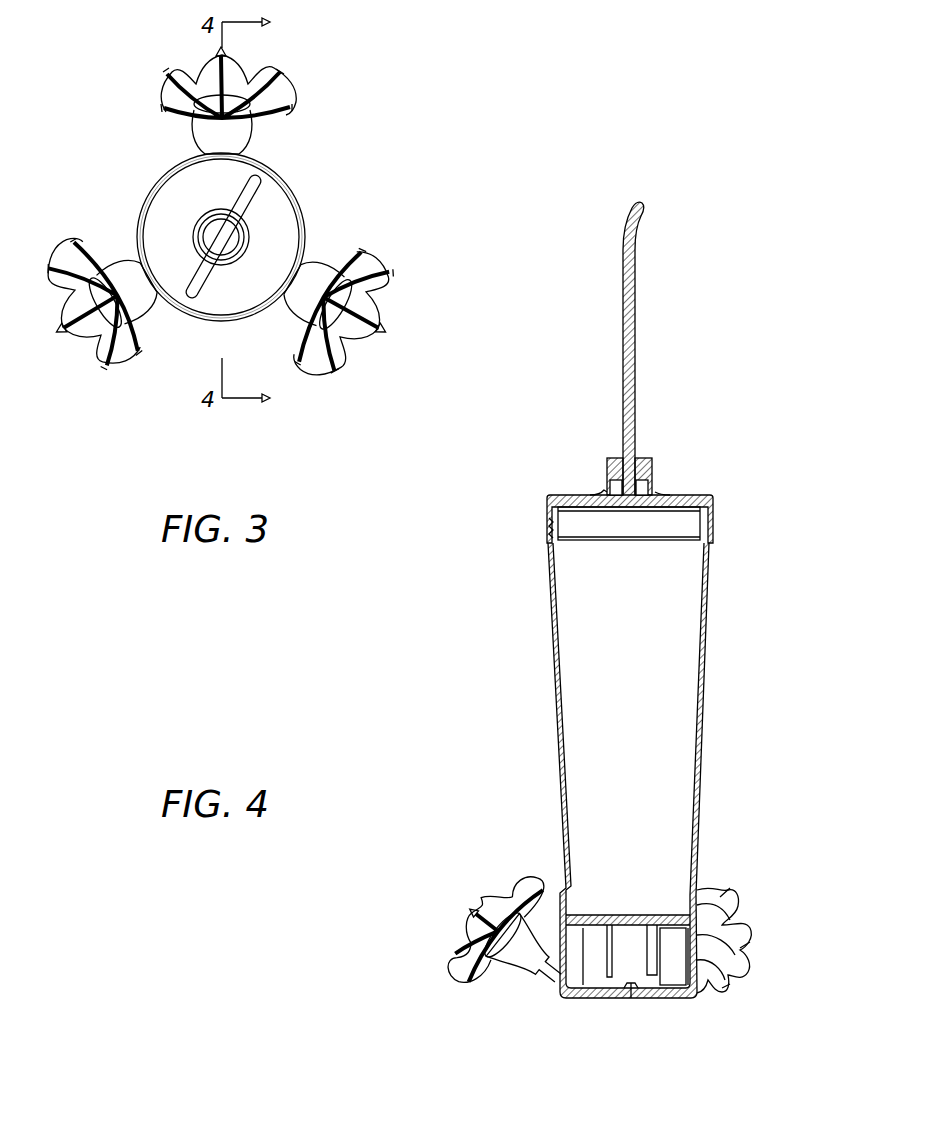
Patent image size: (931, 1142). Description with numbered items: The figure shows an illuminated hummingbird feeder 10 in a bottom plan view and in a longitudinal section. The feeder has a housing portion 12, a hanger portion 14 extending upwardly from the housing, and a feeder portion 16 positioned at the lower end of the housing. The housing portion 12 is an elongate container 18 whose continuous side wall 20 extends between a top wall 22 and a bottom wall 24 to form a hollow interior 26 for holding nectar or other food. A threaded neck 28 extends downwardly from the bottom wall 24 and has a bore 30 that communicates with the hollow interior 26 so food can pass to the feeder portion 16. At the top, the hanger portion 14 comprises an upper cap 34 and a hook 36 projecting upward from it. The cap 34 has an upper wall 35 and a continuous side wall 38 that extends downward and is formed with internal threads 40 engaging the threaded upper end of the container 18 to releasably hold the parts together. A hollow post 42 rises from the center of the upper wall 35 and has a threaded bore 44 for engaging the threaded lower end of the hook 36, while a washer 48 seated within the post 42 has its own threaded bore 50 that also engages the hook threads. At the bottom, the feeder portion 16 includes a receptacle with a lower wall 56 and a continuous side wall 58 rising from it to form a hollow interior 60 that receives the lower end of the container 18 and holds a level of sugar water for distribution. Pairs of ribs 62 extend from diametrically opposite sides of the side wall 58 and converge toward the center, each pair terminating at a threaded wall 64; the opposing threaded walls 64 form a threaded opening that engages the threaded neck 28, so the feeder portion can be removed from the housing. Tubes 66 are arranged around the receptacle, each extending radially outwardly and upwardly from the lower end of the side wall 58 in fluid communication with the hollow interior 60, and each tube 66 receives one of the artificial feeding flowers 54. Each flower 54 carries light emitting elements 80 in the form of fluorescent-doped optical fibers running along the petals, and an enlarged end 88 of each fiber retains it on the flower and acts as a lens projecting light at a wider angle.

In FIG. 3, the illuminated hummingbird feeder 10 is at (418, 114).
In FIG. 4, the illuminated hummingbird feeder 10 is at (440, 712).
In FIG. 3, the housing portion 12 is at (310, 183).
In FIG. 4, the housing portion 12 is at (722, 646).
In FIG. 4, the hanger portion 14 is at (726, 513).
In FIG. 4, the feeder portion 16 is at (664, 1010).
In FIG. 4, the elongate container 18 is at (556, 682).
In FIG. 4, the side wall 20 is at (551, 600).
In FIG. 4, the top wall 22 is at (578, 497).
In FIG. 4, the bottom wall 24 is at (600, 965).
In FIG. 4, the hollow interior 26 is at (588, 757).
In FIG. 4, the threaded neck 28 is at (616, 990).
In FIG. 4, the bore 30 is at (625, 950).
In FIG. 4, the upper cap 34 is at (548, 520).
In FIG. 3, the upper wall 35 is at (240, 290).
In FIG. 4, the upper wall 35 is at (680, 497).
In FIG. 3, the hook 36 is at (255, 192).
In FIG. 4, the hook 36 is at (636, 316).
In FIG. 4, the side wall 38 is at (548, 540).
In FIG. 4, the internal threads 40 is at (712, 526).
In FIG. 3, the hollow post 42 is at (238, 239).
In FIG. 4, the hollow post 42 is at (616, 456).
In FIG. 4, the threaded bore 44 is at (652, 470).
In FIG. 4, the washer 48 is at (616, 486).
In FIG. 4, the threaded bore 50 is at (642, 510).
In FIG. 3, the artificial feeding flowers 54 is at (142, 93).
In FIG. 4, the artificial feeding flowers 54 is at (446, 905).
In FIG. 4, the lower wall 56 is at (643, 1000).
In FIG. 4, the side wall 58 is at (748, 970).
In FIG. 4, the hollow interior 60 is at (680, 968).
In FIG. 4, the ribs 62 is at (598, 930).
In FIG. 4, the threaded wall 64 is at (695, 916).
In FIG. 4, the tubes 66 is at (556, 977).
In FIG. 3, the light emitting element 80 is at (246, 64).
In FIG. 4, the light emitting element 80 is at (492, 940).
In FIG. 3, the end of optical fiber 88 is at (285, 78).